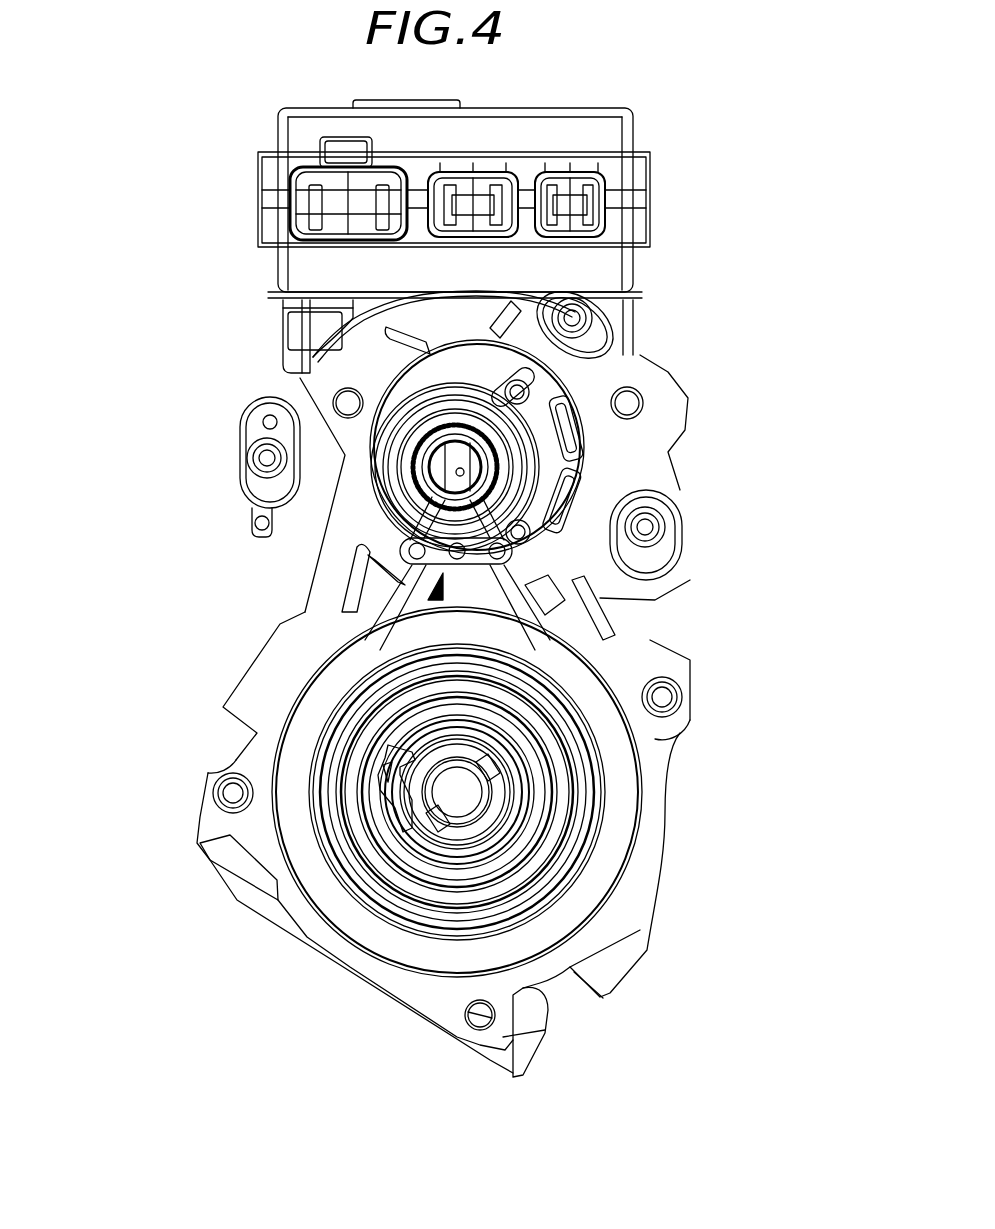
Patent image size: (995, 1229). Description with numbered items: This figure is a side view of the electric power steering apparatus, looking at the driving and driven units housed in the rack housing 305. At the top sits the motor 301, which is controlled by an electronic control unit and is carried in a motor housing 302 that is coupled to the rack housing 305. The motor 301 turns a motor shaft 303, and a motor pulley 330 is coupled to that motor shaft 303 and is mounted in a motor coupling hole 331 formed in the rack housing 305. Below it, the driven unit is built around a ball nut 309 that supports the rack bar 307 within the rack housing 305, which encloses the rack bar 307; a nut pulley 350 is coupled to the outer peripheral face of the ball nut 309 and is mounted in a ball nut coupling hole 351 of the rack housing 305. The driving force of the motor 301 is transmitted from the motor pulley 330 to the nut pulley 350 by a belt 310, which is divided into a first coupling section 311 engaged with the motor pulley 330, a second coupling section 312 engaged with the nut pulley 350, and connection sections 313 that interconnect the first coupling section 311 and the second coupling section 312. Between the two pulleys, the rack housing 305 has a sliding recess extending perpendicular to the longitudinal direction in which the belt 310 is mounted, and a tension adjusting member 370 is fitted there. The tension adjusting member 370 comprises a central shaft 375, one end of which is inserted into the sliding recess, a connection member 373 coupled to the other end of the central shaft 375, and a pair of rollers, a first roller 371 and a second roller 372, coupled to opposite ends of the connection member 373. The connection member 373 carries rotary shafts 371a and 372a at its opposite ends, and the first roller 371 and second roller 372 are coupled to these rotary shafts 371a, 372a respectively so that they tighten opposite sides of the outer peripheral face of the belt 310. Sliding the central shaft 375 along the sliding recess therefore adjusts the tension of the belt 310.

The motor 301 is at (427, 320).
The motor housing 302 is at (258, 390).
The motor shaft 303 is at (458, 452).
The rack housing 305 is at (663, 815).
The rack bar 307 is at (578, 815).
The ball nut 309 is at (520, 850).
The belt 310 is at (249, 477).
The first coupling section 311 is at (440, 477).
The second coupling section 312 is at (327, 740).
The connection sections 313 is at (417, 552).
The motor pulley 330 is at (460, 433).
The motor coupling hole 331 is at (605, 365).
The nut pulley 350 is at (460, 792).
The ball nut coupling hole 351 is at (357, 920).
The tension adjusting member 370 is at (571, 581).
The first roller 371 is at (440, 477).
The rotary shaft 371a is at (440, 497).
The second roller 372 is at (433, 503).
The rotary shaft 372a is at (500, 550).
The connection member 373 is at (460, 556).
The central shaft 375 is at (483, 556).